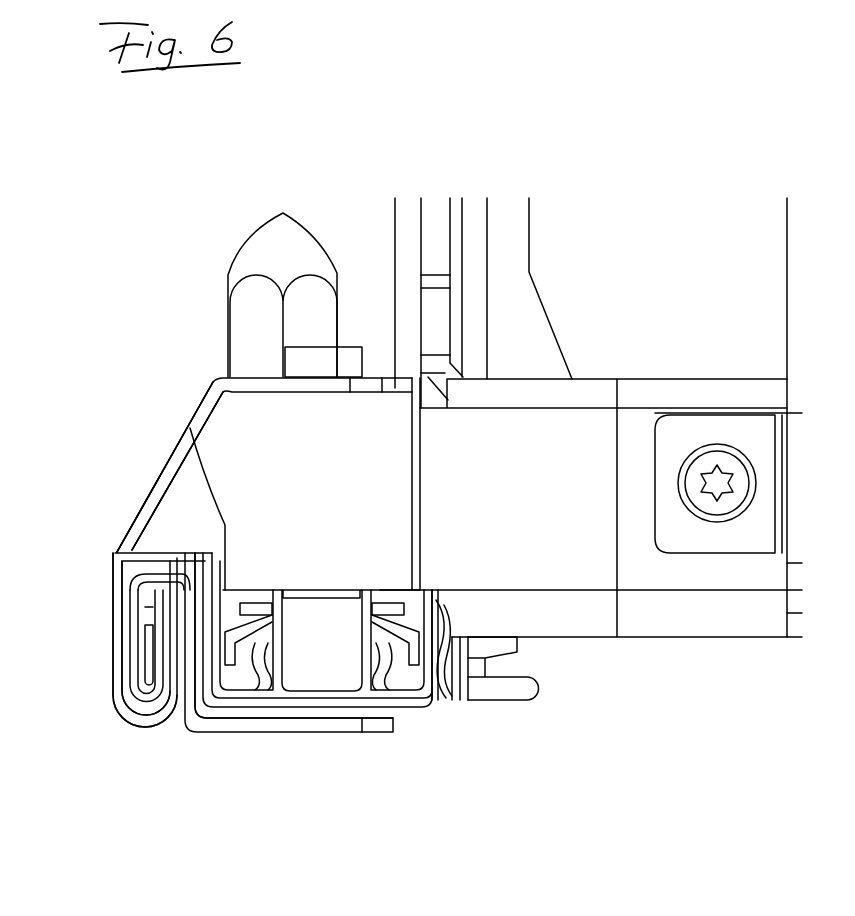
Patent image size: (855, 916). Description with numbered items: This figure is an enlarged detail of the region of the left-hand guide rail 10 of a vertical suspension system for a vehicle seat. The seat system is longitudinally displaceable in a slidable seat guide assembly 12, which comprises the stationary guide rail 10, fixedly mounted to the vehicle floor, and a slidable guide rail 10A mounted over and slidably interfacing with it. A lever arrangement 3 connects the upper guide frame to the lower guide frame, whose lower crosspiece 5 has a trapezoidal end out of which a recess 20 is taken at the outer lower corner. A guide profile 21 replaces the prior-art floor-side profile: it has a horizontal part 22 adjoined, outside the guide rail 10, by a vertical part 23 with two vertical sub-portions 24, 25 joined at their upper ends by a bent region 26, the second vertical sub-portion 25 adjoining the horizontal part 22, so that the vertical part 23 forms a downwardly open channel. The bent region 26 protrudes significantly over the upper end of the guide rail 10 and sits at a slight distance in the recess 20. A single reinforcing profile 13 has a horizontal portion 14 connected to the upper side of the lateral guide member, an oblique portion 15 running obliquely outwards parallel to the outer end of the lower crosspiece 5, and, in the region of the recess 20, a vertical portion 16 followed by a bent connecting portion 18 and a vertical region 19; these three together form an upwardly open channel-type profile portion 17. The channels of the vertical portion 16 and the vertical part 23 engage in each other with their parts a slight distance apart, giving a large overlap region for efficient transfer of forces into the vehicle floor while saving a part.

The lever arrangement 3 is at (438, 248).
The lower crosspiece 5 is at (577, 527).
The stationary guide rail 10 is at (380, 693).
The slidable guide rail 10A is at (423, 710).
The slidable seat guide assembly 12 is at (328, 677).
The reinforcing profile 13 is at (166, 426).
The horizontal portion 14 is at (253, 385).
The oblique portion 15 is at (148, 518).
The vertical portion 16 is at (113, 597).
The channel-type profile portion 17 is at (161, 738).
The connecting portion 18 is at (132, 730).
The vertical region 19 is at (113, 628).
The recess 20 is at (115, 610).
The guide profile 21 is at (221, 738).
The horizontal part 22 is at (262, 732).
The vertical part 23 is at (137, 572).
The first vertical sub-portion 24 is at (147, 643).
The second vertical sub-portion 25 is at (190, 428).
The bent region 26 is at (128, 550).